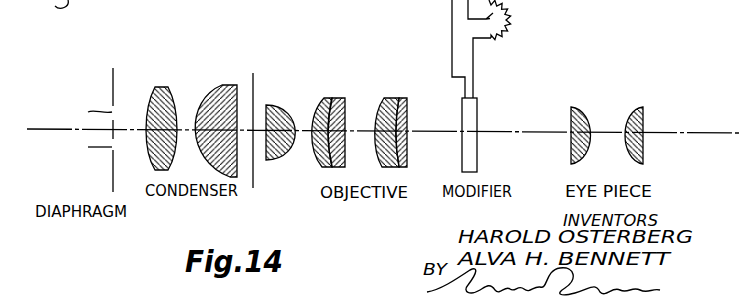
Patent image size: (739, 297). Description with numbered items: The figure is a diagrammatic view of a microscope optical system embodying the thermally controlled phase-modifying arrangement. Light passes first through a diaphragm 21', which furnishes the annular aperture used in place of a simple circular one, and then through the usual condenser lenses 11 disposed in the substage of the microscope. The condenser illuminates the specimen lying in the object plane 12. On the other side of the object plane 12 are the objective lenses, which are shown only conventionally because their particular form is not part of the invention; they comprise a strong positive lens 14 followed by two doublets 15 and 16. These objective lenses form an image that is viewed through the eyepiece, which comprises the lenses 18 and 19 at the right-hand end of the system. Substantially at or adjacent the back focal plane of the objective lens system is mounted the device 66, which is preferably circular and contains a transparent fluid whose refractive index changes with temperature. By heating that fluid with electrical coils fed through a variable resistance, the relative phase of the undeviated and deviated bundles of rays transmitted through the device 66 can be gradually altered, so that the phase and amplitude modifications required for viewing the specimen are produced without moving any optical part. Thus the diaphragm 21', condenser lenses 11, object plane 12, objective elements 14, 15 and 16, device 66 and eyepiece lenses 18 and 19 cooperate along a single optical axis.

The diaphragm 21' is at (94, 116).
The condenser lenses 11 is at (213, 97).
The object plane 12 is at (253, 73).
The strong positive lens 14 is at (283, 104).
The doublet 15 is at (337, 97).
The doublet 16 is at (400, 97).
The device 66 is at (490, 139).
The eyepiece lens 18 is at (582, 108).
The eyepiece lens 19 is at (637, 108).